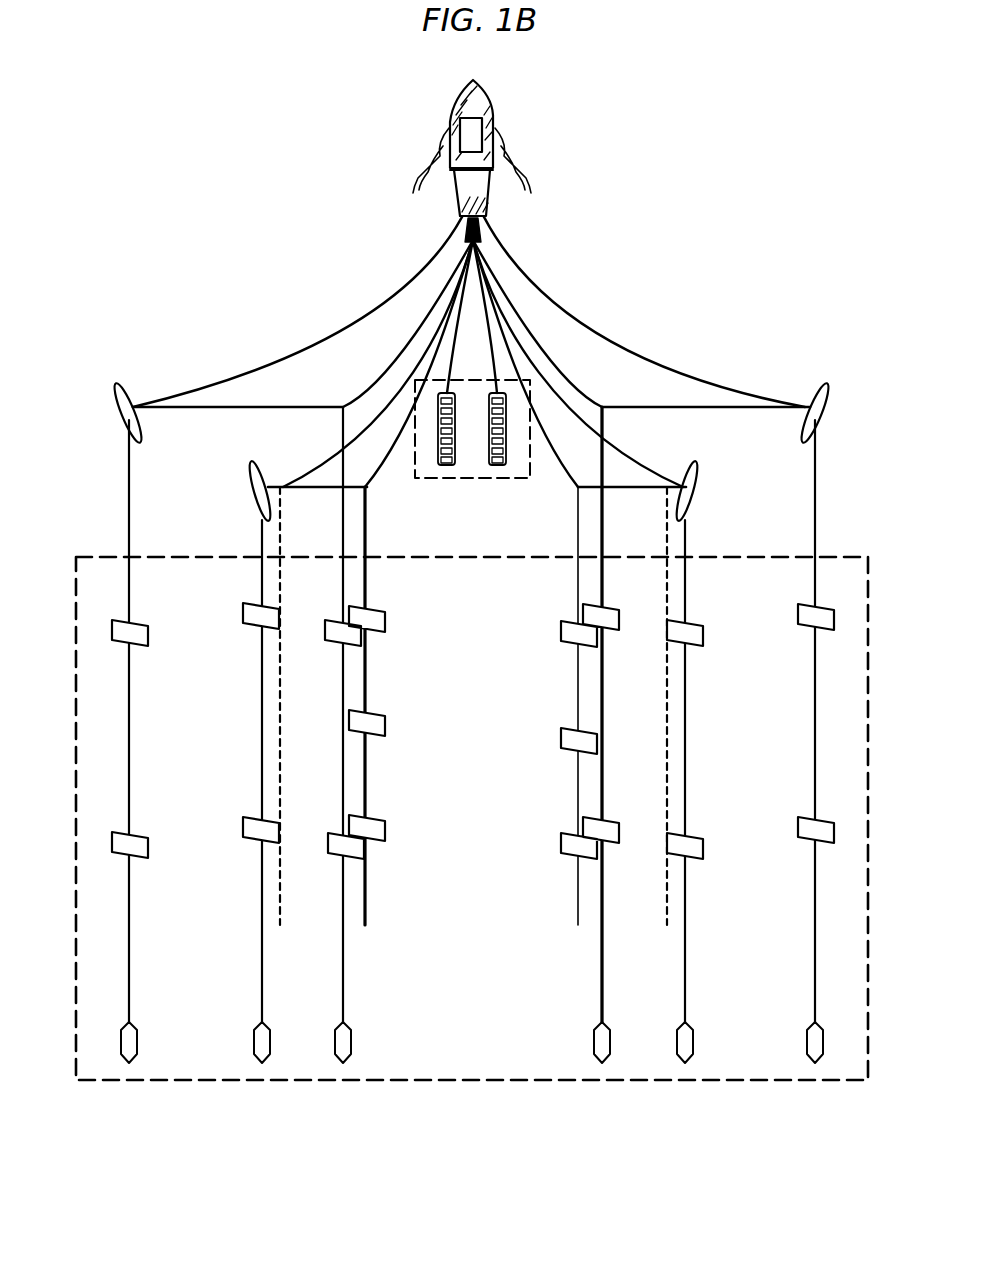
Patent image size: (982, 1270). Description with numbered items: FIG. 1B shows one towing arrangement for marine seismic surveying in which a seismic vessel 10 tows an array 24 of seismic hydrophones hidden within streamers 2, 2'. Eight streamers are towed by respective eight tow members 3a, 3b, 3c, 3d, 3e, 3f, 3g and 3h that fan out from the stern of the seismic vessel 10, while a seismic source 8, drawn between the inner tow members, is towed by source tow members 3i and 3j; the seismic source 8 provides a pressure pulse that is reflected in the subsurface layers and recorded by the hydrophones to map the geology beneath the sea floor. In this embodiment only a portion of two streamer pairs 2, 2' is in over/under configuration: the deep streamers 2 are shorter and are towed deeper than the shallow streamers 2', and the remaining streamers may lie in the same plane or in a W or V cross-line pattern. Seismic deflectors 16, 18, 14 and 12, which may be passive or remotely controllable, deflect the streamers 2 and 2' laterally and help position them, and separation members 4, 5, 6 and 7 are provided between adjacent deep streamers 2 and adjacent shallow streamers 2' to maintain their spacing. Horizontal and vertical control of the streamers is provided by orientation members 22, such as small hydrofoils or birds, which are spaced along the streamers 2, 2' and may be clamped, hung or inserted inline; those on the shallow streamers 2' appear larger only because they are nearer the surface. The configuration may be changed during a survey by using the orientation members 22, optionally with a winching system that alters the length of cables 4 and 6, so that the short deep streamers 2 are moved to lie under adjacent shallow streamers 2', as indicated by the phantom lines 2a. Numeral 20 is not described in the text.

The seismic vessel 10 is at (463, 98).
The tow member 3a is at (503, 248).
The tow member 3b is at (508, 282).
The tow member 3c is at (516, 300).
The tow member 3d is at (512, 325).
The tow member 3e is at (442, 244).
The tow member 3f is at (434, 274).
The tow member 3g is at (434, 300).
The tow member 3h is at (446, 325).
The source tow member 3i is at (452, 345).
The source tow member 3j is at (500, 345).
The seismic source 8 is at (485, 478).
The separation member 7 is at (197, 406).
The separation member 5 is at (757, 406).
The separation member 6 is at (303, 487).
The separation member 4 is at (645, 487).
The seismic deflector 16 is at (117, 383).
The seismic deflector 18 is at (250, 485).
The seismic deflector 14 is at (698, 487).
The seismic deflector 12 is at (825, 383).
The streamer 2 is at (471, 706).
The phantom line 2a is at (280, 727).
The streamer 2' is at (472, 714).
The orientation member 22 is at (567, 837).
The sinker 20 is at (349, 1035).
The array 24 is at (475, 1080).